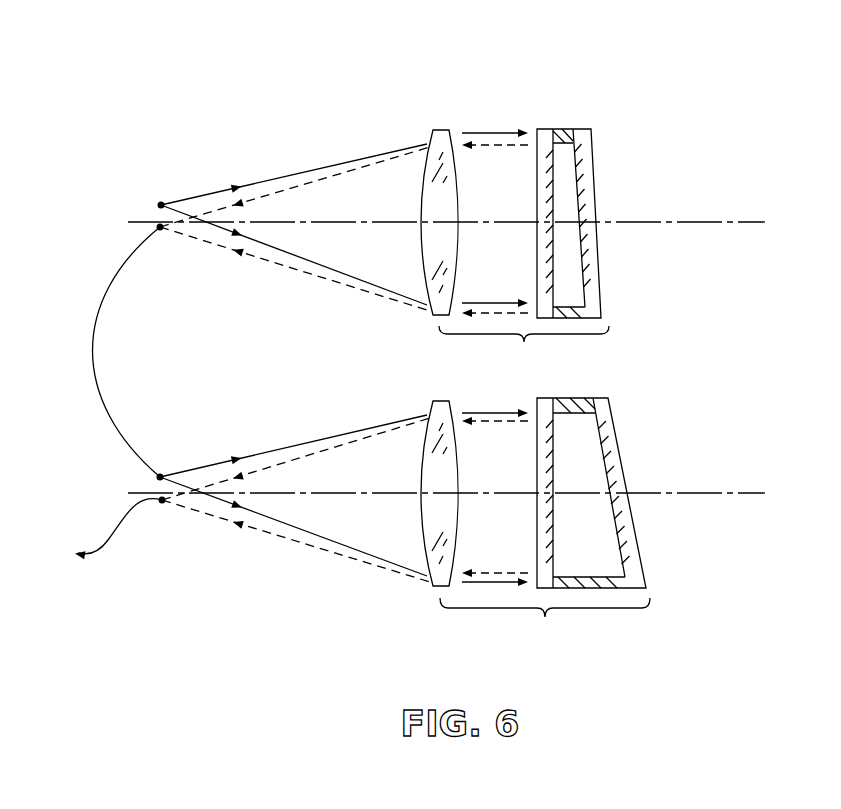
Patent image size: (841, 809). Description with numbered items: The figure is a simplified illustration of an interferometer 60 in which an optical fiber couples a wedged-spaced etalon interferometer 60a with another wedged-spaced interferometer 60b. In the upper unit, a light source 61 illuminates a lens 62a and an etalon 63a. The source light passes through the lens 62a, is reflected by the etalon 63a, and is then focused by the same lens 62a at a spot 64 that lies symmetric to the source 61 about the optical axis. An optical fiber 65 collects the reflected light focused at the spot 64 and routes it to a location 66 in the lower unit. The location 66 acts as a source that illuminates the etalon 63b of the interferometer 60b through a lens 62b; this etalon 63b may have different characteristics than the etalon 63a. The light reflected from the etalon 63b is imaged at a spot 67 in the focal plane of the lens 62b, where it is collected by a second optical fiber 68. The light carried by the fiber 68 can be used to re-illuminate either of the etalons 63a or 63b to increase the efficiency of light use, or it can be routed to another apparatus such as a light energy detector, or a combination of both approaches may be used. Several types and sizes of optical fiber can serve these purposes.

The interferometer 60 is at (303, 82).
The wedged-spaced etalon interferometer 60a is at (524, 253).
The wedged-spaced interferometer 60b is at (545, 534).
The light source 61 is at (161, 203).
The lens 62a is at (440, 130).
The lens 62b is at (440, 589).
The etalon 63a is at (592, 115).
The etalon 63b is at (593, 395).
The spot 64 is at (161, 230).
The optical fiber 65 is at (91, 346).
The location 66 is at (160, 475).
The spot 67 is at (162, 503).
The optical fiber 68 is at (99, 551).